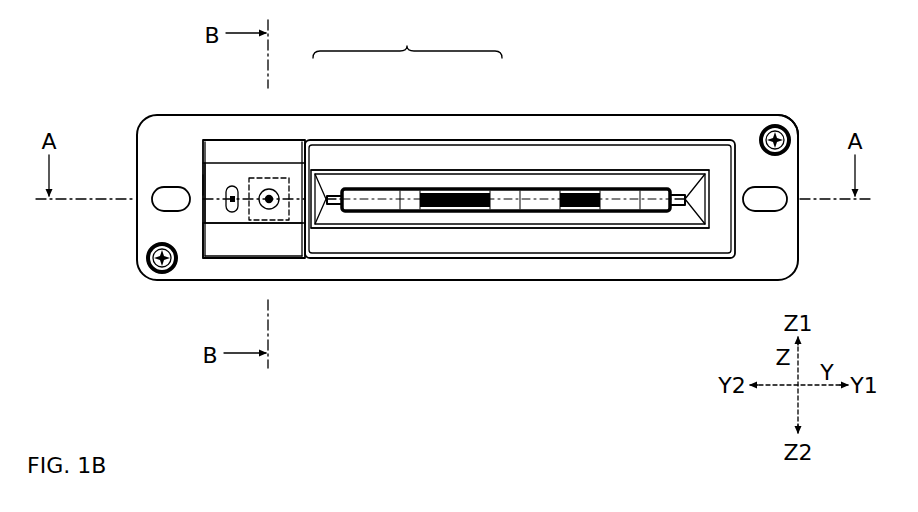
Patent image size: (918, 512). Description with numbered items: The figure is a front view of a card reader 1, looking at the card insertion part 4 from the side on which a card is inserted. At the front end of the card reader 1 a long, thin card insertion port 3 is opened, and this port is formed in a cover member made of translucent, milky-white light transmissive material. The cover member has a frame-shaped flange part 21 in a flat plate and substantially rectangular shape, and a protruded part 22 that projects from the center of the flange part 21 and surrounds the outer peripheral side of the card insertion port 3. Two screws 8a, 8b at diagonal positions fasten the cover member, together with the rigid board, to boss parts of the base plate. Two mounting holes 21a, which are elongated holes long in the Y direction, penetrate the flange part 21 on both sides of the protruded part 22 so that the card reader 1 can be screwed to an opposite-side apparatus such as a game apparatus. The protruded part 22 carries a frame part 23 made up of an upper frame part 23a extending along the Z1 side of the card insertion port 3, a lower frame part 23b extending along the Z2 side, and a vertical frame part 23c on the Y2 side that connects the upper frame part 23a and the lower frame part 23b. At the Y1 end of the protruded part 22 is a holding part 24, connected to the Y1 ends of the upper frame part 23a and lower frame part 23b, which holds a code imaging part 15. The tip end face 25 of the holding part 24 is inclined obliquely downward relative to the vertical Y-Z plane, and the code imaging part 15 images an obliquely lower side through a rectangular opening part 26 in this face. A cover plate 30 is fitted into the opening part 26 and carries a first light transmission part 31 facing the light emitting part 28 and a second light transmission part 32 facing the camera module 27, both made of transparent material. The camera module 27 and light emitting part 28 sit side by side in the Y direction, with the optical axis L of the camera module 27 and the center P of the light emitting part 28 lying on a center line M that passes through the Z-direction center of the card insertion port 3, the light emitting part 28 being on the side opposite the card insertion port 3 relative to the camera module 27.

The card reader 1 is at (133, 116).
The card insertion port 3 is at (445, 213).
The card insertion part 4 is at (695, 112).
The screw 8a is at (795, 128).
The screw 8b is at (147, 270).
The code imaging part 15 is at (230, 228).
The flange part 21 is at (748, 119).
The mounting hole 21a is at (157, 202).
The protruded part 22 is at (407, 41).
The frame part 23 is at (455, 146).
The upper frame part 23a is at (570, 152).
The lower frame part 23b is at (562, 242).
The vertical frame part 23c is at (717, 217).
The holding part 24 is at (290, 148).
The tip end face 25 is at (237, 247).
The opening part 26 is at (203, 168).
The camera module 27 is at (257, 178).
The light emitting part 28 is at (217, 210).
The cover plate 30 is at (207, 186).
The first light transmission part 31 is at (233, 187).
The second light transmission part 32 is at (271, 187).
The center of the light emitting part P is at (233, 205).
The optical axis L is at (270, 204).
The center line M is at (365, 226).